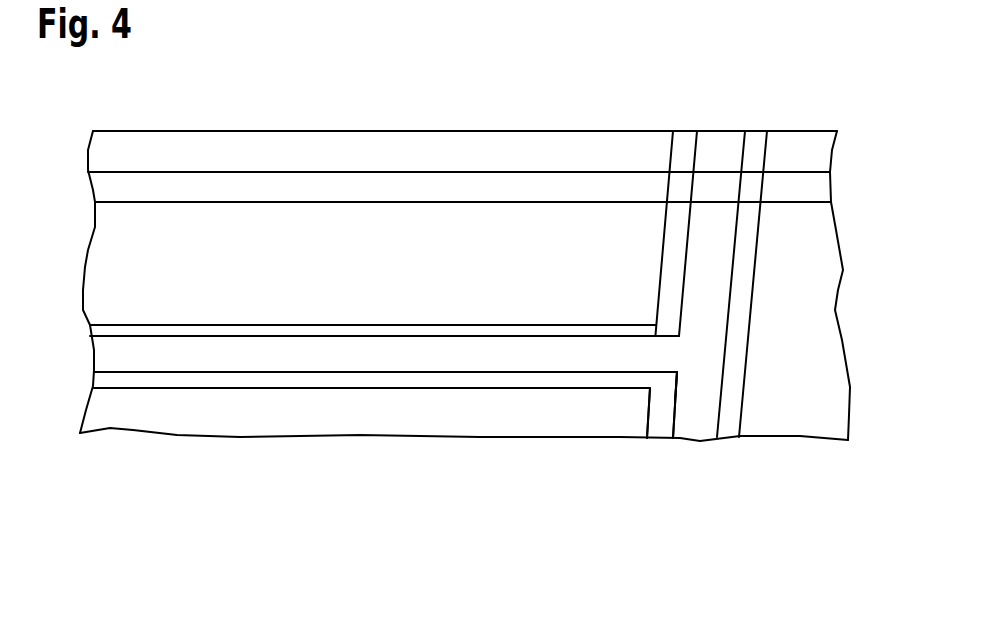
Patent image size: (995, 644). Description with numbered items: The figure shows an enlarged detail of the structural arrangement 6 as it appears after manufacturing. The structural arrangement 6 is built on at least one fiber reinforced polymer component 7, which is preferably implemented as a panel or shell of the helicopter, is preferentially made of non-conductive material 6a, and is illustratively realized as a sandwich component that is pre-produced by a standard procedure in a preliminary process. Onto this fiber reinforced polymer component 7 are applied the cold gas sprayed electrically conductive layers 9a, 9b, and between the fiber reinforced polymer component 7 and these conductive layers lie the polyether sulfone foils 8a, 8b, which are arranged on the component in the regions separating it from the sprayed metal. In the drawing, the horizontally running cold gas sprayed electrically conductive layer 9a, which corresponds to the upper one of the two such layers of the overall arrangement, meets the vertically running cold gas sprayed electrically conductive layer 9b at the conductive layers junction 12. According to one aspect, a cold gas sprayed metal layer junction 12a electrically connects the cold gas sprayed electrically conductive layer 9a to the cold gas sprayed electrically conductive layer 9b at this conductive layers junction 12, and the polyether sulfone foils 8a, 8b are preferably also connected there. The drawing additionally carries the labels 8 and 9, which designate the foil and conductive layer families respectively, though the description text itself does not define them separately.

The structural arrangement 6 is at (816, 120).
The non-conductive material 6a is at (361, 415).
The fiber reinforced polymer component 7 is at (176, 443).
The first conductive layer 8 is at (762, 124).
The polyether sulfone foil 8a is at (103, 378).
The polyether sulfone foil 8b is at (740, 272).
The via 9 is at (679, 440).
The cold gas sprayed electrically conductive layer 9a is at (110, 352).
The cold gas sprayed electrically conductive layer 9b is at (717, 150).
The conductive layers junction 12 is at (670, 351).
The cold gas sprayed metal layer junction 12a is at (680, 358).